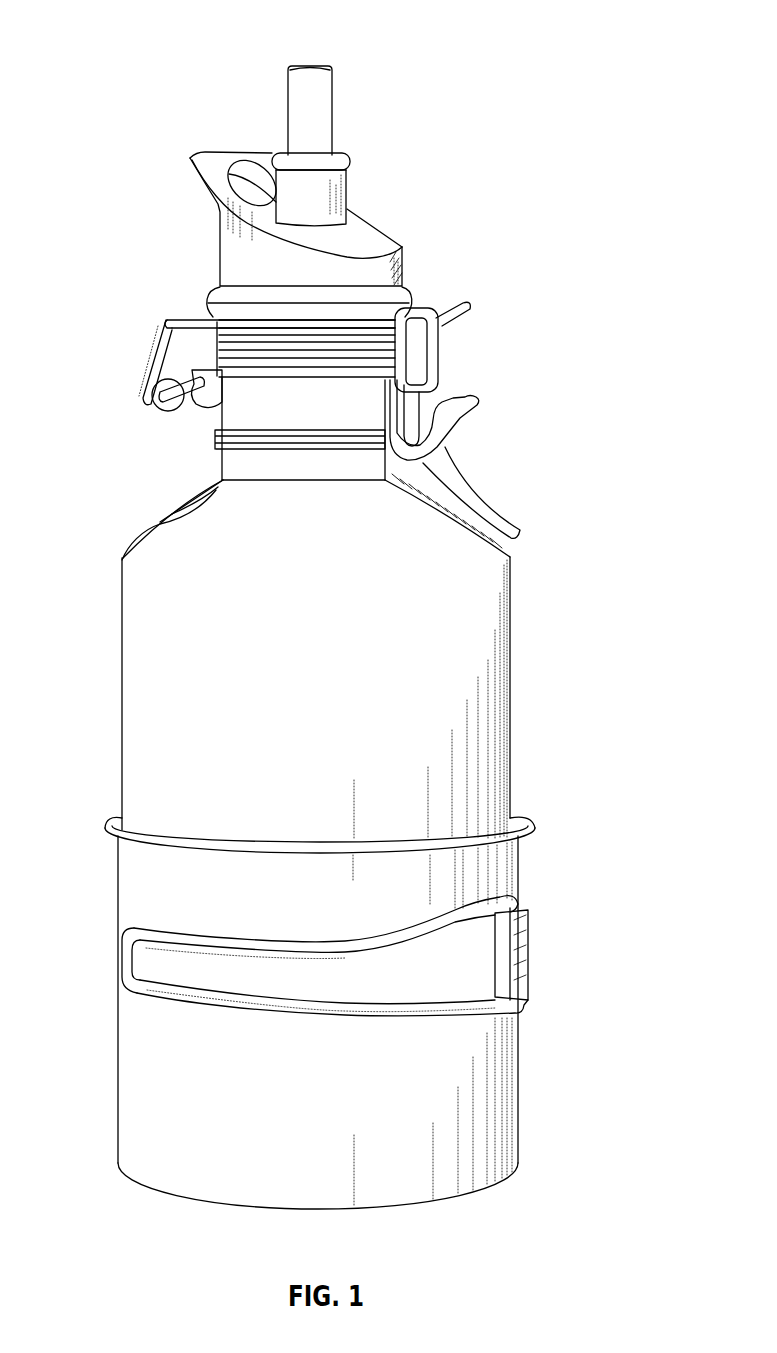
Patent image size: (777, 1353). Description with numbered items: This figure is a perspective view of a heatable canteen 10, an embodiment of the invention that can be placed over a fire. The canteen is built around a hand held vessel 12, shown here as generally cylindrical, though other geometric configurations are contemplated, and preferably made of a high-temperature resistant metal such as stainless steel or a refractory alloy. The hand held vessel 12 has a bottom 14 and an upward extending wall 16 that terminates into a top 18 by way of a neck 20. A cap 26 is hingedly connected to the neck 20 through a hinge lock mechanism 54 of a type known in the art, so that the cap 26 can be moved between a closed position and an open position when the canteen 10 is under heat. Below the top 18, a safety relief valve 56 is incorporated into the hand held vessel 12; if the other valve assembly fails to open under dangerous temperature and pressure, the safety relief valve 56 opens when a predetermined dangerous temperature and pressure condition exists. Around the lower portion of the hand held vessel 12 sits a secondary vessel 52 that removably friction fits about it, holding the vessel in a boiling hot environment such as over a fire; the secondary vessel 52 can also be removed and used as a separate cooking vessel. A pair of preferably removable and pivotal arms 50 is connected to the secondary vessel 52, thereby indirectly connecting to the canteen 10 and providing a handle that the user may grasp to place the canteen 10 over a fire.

The heatable canteen 10 is at (338, 437).
The hand held vessel 12 is at (338, 563).
The bottom 14 is at (288, 1033).
The upward extending wall 16 is at (512, 696).
The top 18 is at (289, 167).
The neck 20 is at (228, 410).
The cap 26 is at (358, 63).
The arms 50 is at (170, 1003).
The secondary vessel 52 is at (137, 880).
The hinge lock mechanism 54 is at (437, 340).
The safety relief valve 56 is at (128, 555).